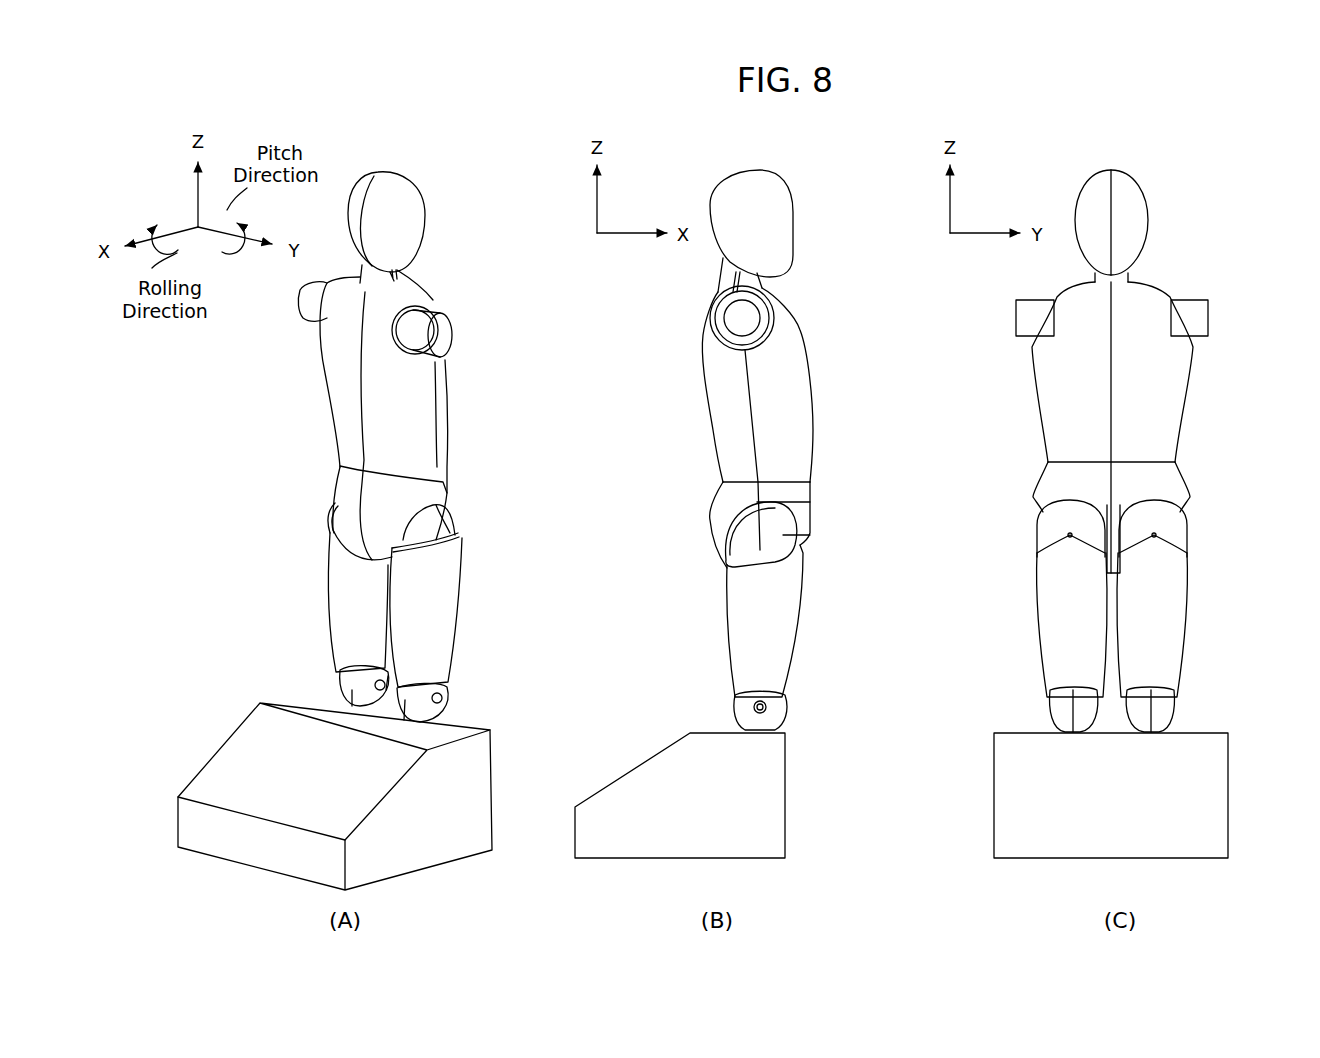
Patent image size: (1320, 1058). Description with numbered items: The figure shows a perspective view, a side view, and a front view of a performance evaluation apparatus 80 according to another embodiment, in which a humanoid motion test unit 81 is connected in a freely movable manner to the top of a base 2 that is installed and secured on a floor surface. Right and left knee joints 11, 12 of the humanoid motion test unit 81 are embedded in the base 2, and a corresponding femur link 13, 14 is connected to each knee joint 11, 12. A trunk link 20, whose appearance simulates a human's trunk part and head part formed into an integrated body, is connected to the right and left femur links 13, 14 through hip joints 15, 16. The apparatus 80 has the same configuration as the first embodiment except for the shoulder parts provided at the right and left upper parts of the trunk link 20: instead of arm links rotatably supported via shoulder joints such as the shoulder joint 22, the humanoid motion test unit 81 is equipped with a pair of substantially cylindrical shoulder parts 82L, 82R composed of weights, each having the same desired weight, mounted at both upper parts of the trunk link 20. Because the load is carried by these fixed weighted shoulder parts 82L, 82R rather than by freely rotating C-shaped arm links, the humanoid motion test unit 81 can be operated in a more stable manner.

The base 2 is at (228, 742).
The right knee joint 11 is at (340, 680).
The left knee joint 12 is at (448, 700).
The right femur link 13 is at (333, 592).
The left femur link 14 is at (440, 600).
The right hip joint 15 is at (330, 516).
The left hip joint 16 is at (437, 522).
The trunk link 20 is at (350, 438).
The shoulder joint 22 is at (740, 316).
The performance evaluation apparatus 80 is at (243, 415).
The humanoid motion test unit 81 is at (450, 264).
The left shoulder part 82L is at (305, 300).
The right shoulder part 82R is at (452, 328).